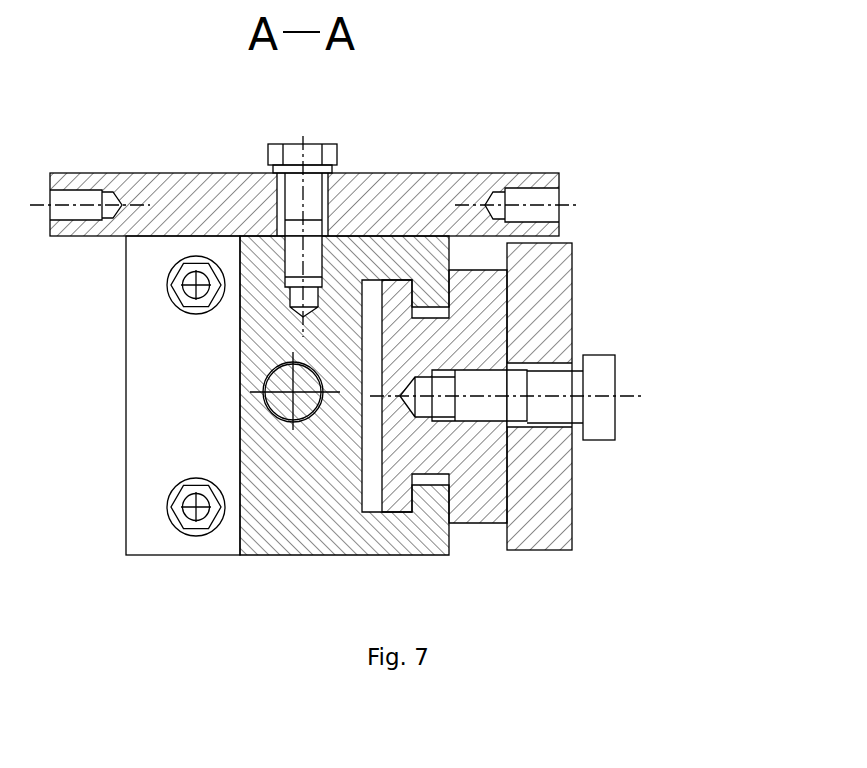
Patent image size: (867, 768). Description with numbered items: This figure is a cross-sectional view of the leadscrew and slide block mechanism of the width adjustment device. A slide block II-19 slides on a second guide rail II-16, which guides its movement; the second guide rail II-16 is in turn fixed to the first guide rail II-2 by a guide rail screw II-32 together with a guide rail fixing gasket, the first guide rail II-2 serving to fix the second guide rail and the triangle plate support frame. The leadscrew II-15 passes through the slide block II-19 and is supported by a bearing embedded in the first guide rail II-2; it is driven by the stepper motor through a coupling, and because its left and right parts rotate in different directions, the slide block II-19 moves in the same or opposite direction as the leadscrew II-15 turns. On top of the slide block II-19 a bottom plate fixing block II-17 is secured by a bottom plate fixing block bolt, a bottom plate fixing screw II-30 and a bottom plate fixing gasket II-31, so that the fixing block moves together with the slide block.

The bottom plate fixing plate screw II-30 is at (300, 155).
The bottom plate fixing plate gasket II-31 is at (313, 172).
The bottom plate fixing block II-17 is at (460, 210).
The slide block II-19 is at (425, 272).
The second guide rail II-16 is at (460, 310).
The leadscrew II-15 is at (303, 385).
The guide rail screw II-32 is at (573, 423).
The first guide rail II-2 is at (530, 500).